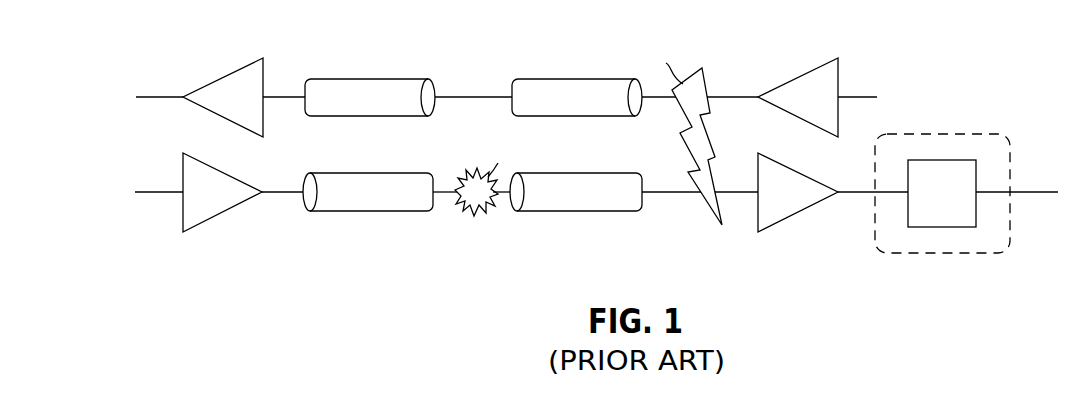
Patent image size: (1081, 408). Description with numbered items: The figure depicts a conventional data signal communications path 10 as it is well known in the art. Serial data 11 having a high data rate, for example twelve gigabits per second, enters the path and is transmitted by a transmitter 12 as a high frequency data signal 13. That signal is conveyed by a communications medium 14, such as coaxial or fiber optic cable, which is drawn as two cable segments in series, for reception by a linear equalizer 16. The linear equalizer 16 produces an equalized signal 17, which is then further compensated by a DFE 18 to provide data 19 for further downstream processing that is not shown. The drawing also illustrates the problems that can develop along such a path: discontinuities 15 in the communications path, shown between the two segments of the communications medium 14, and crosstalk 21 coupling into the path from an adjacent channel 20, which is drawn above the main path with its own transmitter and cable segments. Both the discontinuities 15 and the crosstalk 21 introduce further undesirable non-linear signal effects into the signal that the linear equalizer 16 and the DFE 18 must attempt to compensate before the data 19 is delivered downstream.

The serial data link system 10 is at (210, 278).
The serial data 11 is at (158, 193).
The transmitter 12 is at (206, 215).
The high frequency data signal 13 is at (284, 193).
The communications medium 14 is at (388, 211).
The discontinuities 15 is at (479, 213).
The linear equalizer 16 is at (781, 221).
The equalized signal 17 is at (850, 193).
The DFE 18 is at (930, 228).
The data 19 is at (1027, 192).
The adjacent channel 20 is at (958, 68).
The crosstalk 21 is at (712, 130).